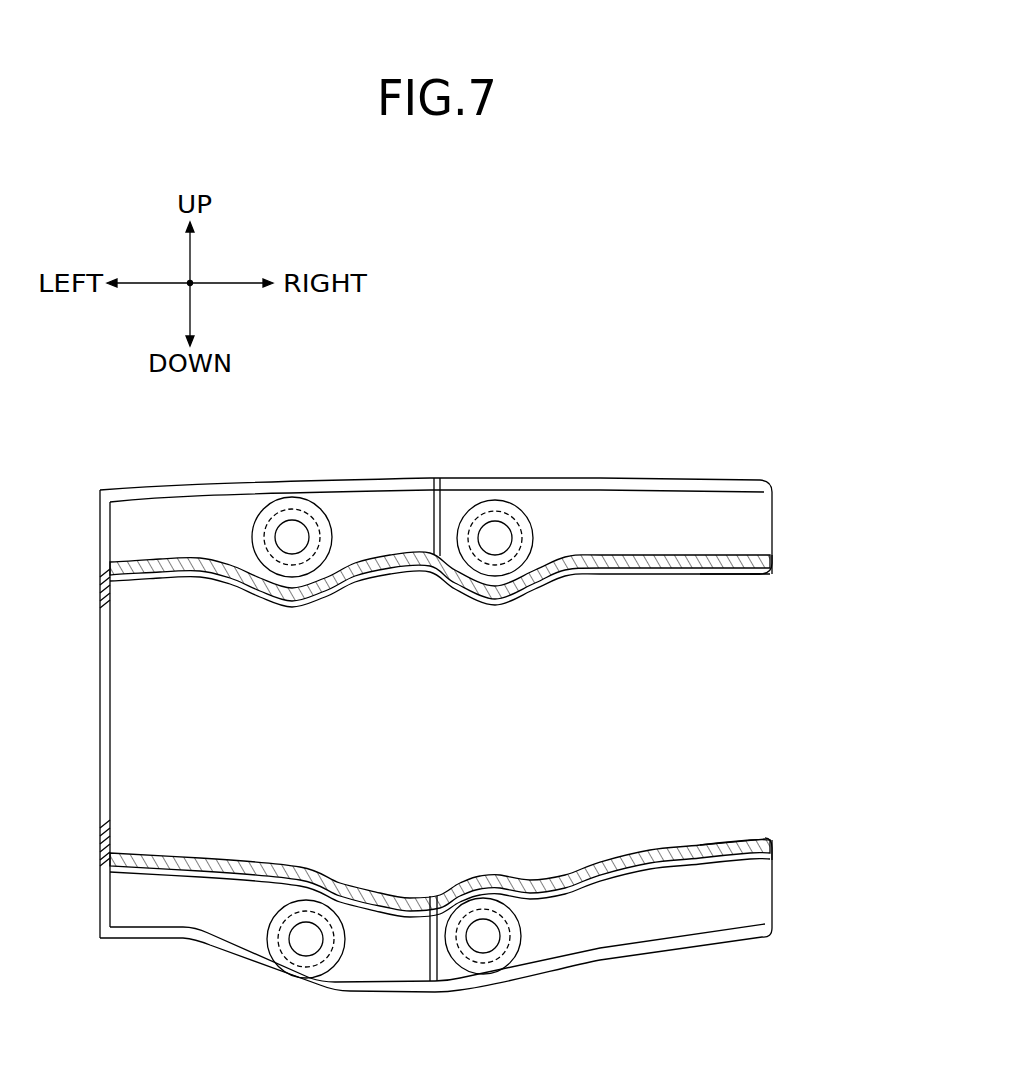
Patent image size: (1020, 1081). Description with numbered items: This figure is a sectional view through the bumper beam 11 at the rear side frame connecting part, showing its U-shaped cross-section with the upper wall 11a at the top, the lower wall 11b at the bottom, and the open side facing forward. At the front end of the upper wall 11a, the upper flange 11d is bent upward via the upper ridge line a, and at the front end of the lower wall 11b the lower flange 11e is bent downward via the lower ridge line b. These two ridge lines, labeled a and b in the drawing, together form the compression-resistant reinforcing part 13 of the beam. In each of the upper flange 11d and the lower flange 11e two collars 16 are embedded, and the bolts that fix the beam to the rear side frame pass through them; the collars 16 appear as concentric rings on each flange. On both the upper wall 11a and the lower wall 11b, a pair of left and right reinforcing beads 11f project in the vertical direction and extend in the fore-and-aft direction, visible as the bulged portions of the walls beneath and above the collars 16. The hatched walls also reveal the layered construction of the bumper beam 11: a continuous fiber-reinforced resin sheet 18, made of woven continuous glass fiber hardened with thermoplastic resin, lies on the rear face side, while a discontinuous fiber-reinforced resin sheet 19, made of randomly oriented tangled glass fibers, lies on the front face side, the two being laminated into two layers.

The bumper beam 11 is at (603, 445).
The upper wall 11a is at (713, 577).
The lower wall 11b is at (719, 848).
The upper flange 11d is at (665, 507).
The lower flange 11e is at (700, 913).
The reinforcing beads 11f is at (493, 603).
The compression-resistant reinforcing part 13 is at (740, 557).
The collars 16 is at (487, 504).
The continuous fiber-reinforced resin sheet 18 is at (567, 557).
The discontinuous fiber-reinforced resin sheet 19 is at (608, 573).